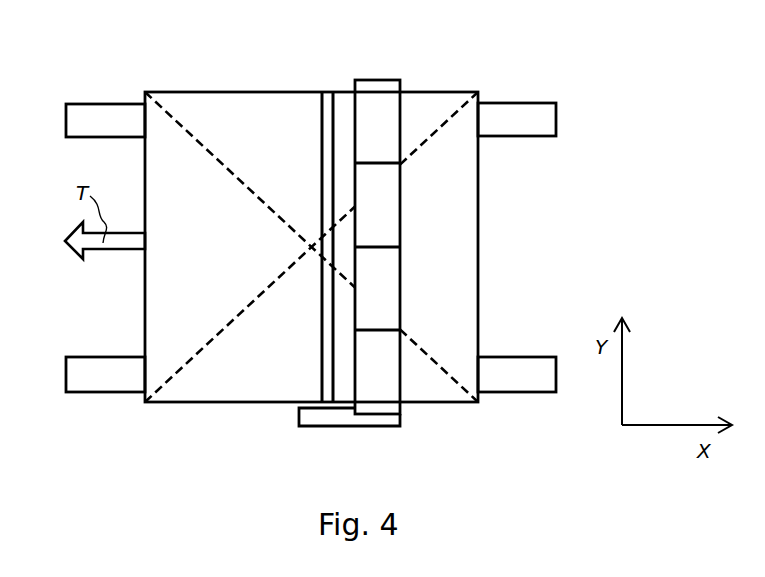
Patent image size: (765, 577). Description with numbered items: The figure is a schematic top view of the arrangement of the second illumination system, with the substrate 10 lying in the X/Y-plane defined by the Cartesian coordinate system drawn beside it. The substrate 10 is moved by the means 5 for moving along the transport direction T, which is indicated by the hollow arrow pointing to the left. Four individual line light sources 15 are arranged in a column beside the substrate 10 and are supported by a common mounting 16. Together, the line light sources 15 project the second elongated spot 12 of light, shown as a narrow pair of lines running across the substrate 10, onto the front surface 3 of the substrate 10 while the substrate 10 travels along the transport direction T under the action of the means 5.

The front surface 3 is at (158, 312).
The means for moving 5 is at (108, 117).
The substrate 10 is at (212, 253).
The second elongated spot 12 is at (328, 122).
The line light sources 15 is at (387, 199).
The mounting 16 is at (320, 418).